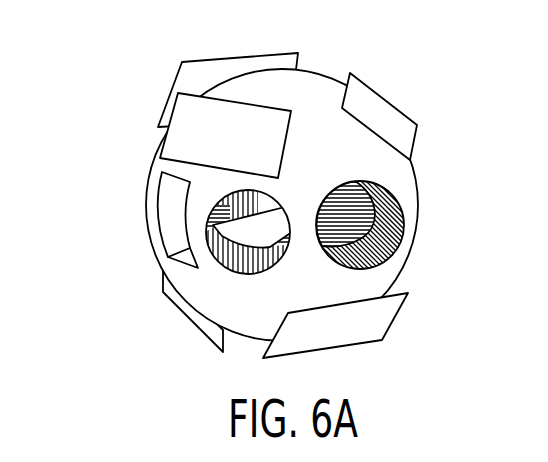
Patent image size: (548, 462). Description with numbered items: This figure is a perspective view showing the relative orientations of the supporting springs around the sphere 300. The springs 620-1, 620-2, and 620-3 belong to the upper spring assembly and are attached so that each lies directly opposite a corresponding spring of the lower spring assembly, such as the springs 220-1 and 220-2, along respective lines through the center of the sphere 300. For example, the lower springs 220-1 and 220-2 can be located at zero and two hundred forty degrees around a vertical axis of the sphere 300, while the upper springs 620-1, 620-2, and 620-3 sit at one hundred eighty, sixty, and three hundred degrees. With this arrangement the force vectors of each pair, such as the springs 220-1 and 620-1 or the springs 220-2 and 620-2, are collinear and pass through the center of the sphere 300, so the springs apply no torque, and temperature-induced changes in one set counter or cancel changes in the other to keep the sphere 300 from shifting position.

The sphere 300 is at (320, 72).
The spring 620-1 is at (225, 72).
The spring 620-2 is at (417, 92).
The spring 620-3 is at (180, 133).
The spring 220-1 is at (325, 335).
The spring 220-2 is at (178, 304).